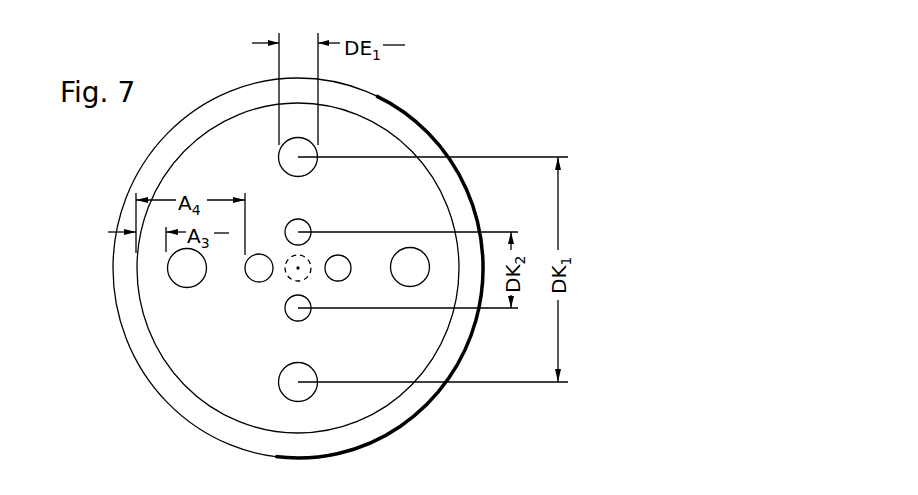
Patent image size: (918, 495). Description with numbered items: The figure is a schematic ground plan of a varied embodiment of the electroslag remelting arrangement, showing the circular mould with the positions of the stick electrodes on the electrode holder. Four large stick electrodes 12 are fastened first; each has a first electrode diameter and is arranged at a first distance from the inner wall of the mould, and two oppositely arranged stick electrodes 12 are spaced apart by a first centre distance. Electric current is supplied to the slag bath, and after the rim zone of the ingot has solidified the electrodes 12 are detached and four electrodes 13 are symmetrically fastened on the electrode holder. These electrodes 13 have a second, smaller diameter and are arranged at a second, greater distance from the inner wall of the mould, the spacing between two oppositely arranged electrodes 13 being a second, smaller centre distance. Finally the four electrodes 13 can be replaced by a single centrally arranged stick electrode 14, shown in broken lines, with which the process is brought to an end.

The large stick electrodes 12 is at (310, 163).
The stick electrodes 13 is at (259, 274).
The central bore (hidden) 14 is at (305, 258).